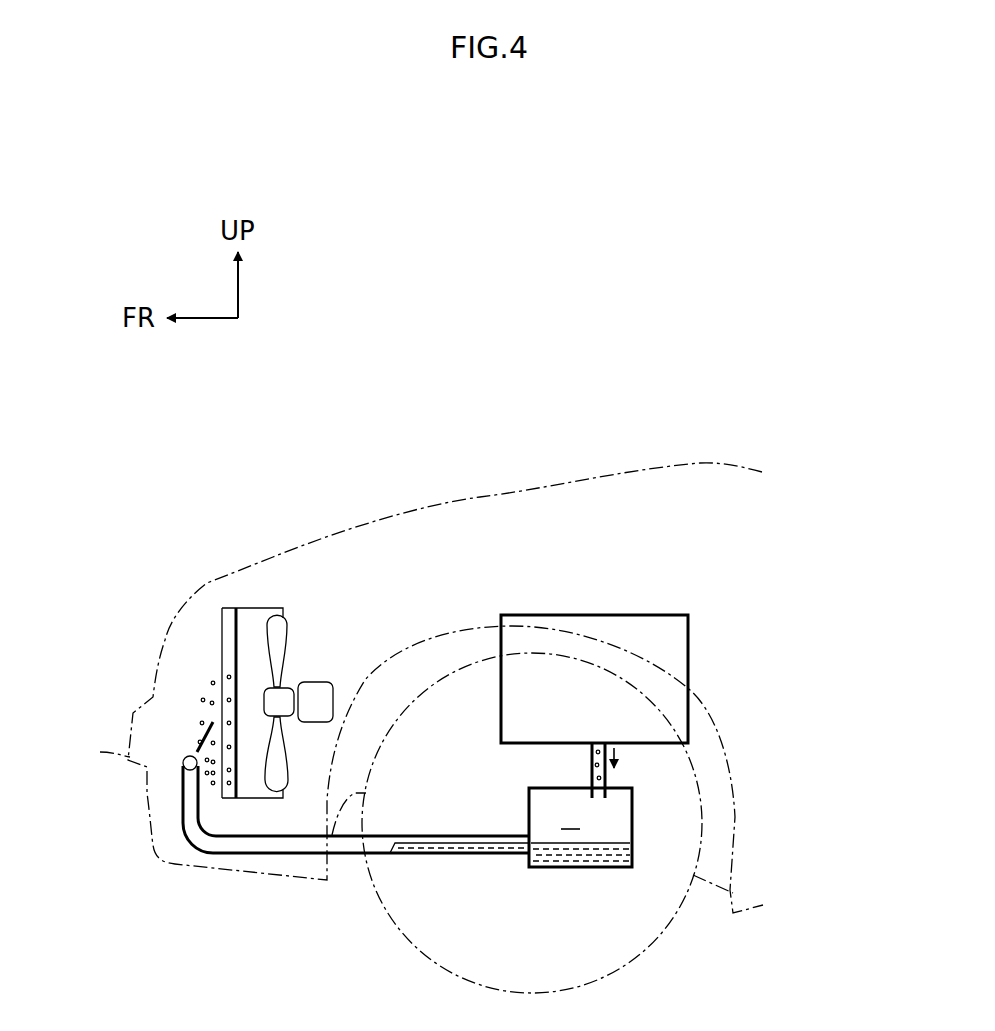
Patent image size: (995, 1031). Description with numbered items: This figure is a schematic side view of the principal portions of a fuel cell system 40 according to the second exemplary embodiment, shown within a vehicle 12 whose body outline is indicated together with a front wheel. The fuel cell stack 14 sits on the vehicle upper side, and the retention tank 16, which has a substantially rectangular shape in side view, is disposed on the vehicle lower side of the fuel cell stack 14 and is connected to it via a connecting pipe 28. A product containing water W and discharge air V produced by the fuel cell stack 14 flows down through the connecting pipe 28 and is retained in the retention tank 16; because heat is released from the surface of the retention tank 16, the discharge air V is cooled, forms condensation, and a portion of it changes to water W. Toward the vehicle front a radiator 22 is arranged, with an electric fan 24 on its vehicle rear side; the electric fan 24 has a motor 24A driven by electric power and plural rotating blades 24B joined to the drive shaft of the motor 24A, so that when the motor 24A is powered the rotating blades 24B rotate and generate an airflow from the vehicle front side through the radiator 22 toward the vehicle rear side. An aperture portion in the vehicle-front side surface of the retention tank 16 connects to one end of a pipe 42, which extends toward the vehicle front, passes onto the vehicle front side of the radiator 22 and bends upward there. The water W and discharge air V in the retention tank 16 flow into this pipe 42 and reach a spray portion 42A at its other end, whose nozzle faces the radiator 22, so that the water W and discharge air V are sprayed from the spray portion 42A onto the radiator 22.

The vehicle 12 is at (408, 428).
The fuel cell stack 14 is at (527, 613).
The retention tank 16 is at (560, 867).
The radiator 22 is at (258, 608).
The electric fan 24 is at (301, 646).
The motor 24A is at (308, 723).
The rotating blades 24B is at (266, 782).
The connecting pipe 28 is at (592, 762).
The fuel cell system 40 is at (408, 620).
The pipe 42 is at (298, 857).
The spray portion 42A is at (183, 765).
The discharge air V is at (196, 740).
The water W is at (213, 662).